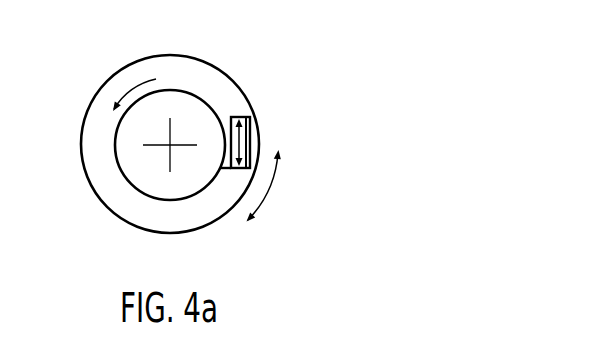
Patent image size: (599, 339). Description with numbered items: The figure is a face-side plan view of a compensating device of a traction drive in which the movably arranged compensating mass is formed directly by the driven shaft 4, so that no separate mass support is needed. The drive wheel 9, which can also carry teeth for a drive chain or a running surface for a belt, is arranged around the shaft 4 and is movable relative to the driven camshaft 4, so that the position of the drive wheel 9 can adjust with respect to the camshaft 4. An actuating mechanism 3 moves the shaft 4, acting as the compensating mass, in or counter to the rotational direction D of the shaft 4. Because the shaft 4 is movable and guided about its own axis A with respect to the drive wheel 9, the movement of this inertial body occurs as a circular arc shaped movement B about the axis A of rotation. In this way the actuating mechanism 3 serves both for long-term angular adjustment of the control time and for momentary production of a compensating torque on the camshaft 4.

The actuating mechanism 3 is at (239, 141).
The driven shaft 4 is at (203, 112).
The drive wheel 9 is at (218, 215).
The axis A is at (169, 146).
The rotational direction D is at (132, 85).
The circular arc shaped movement B is at (270, 186).